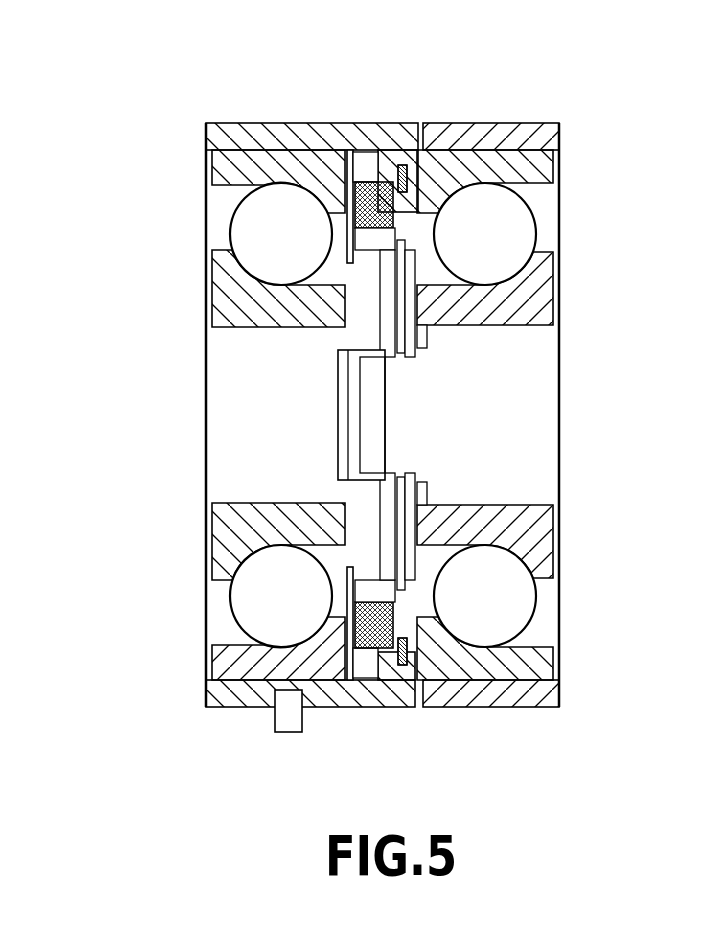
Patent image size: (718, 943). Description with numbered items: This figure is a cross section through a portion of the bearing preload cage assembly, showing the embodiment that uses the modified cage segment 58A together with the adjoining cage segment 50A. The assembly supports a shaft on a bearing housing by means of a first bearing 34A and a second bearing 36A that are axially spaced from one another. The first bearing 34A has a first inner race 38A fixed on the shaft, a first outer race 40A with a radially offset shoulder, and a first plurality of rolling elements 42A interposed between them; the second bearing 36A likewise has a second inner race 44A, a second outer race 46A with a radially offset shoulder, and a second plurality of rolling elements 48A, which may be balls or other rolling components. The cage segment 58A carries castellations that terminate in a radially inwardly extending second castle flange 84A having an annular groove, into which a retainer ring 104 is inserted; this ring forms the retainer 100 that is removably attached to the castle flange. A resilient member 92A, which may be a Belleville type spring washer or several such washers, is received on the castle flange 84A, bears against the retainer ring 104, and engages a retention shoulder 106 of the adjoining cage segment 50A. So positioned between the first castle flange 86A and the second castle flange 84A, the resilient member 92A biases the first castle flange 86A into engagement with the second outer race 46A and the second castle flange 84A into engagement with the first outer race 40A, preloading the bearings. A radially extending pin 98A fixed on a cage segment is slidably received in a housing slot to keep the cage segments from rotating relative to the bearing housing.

The modified cage segment 58A is at (240, 118).
The adjoining cage segment 50A is at (565, 125).
The second bearing 36A is at (316, 138).
The first bearing 34A is at (513, 145).
The retainer 100 is at (403, 131).
The second plurality of rolling elements 48A is at (255, 208).
The first plurality of rolling elements 42A is at (512, 208).
The retention shoulder 106 is at (353, 245).
The second castle flange 84A is at (392, 222).
The second inner race 44A is at (277, 313).
The first inner race 38A is at (530, 525).
The resilient member 92A is at (395, 615).
The second outer race 46A is at (243, 663).
The first outer race 40A is at (525, 662).
The radially extending pin 98A is at (290, 722).
The first castle flange 86A is at (365, 663).
The retainer ring 104 is at (403, 660).